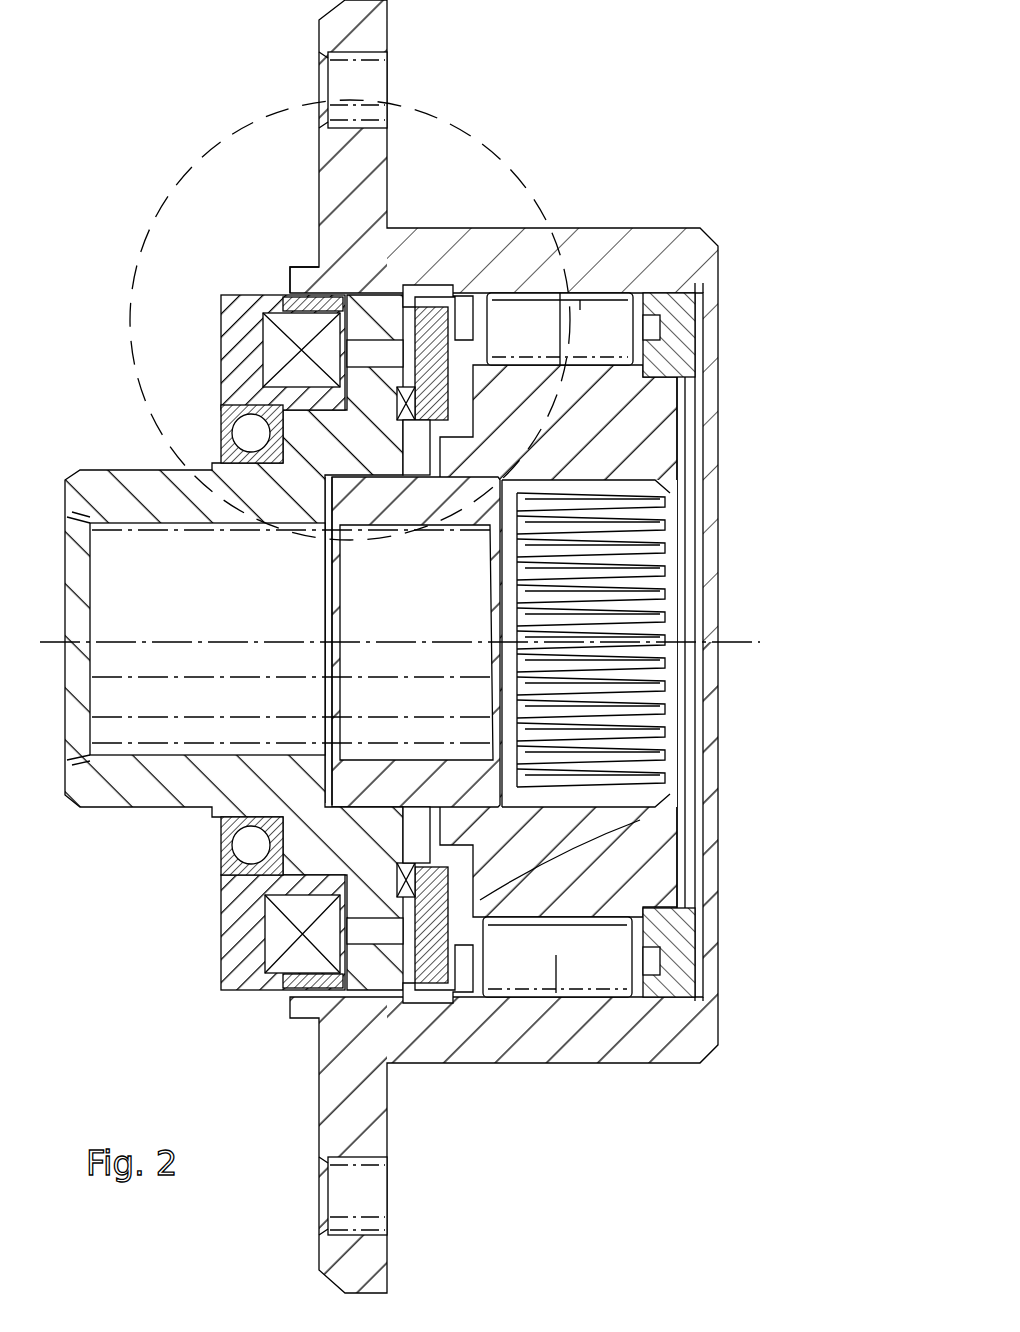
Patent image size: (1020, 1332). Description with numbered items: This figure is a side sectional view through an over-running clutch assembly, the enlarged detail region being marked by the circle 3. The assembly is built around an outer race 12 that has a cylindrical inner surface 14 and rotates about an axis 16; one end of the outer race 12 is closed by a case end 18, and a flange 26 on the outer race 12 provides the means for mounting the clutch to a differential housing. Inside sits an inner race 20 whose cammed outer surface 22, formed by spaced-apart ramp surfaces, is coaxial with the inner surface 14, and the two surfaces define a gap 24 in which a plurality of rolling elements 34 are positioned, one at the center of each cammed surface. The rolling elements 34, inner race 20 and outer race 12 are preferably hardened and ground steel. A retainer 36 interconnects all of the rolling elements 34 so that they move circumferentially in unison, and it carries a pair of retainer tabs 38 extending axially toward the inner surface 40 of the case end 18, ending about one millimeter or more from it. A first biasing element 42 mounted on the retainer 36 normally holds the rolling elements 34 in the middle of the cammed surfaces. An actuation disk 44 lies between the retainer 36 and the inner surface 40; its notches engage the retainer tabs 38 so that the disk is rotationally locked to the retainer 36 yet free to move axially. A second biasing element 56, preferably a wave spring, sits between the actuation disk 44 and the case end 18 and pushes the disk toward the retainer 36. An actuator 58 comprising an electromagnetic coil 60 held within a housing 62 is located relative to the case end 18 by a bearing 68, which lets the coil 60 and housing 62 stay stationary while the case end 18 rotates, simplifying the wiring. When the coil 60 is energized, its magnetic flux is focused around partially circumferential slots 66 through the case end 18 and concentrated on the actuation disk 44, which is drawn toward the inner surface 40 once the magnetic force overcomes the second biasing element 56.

The detail view circle 3 is at (520, 158).
The outer race 12 is at (675, 250).
The cylindrical inner surface 14 is at (598, 300).
The axis 16 is at (758, 648).
The case end 18 is at (296, 270).
The inner race 20 is at (660, 425).
The cammed outer surface 22 is at (658, 342).
The gap 24 is at (660, 326).
The flange 26 is at (372, 42).
The rolling elements 34 is at (560, 300).
The retainer 36 is at (470, 310).
The retainer tabs 38 is at (450, 300).
The inner surface 40 is at (405, 985).
The first biasing element 42 is at (640, 820).
The actuation disk 44 is at (473, 400).
The second biasing element 56 is at (245, 425).
The actuator 58 is at (275, 352).
The electromagnetic coil 60 is at (265, 972).
The housing 62 is at (238, 936).
The slots 66 is at (225, 867).
The bearing 68 is at (248, 435).